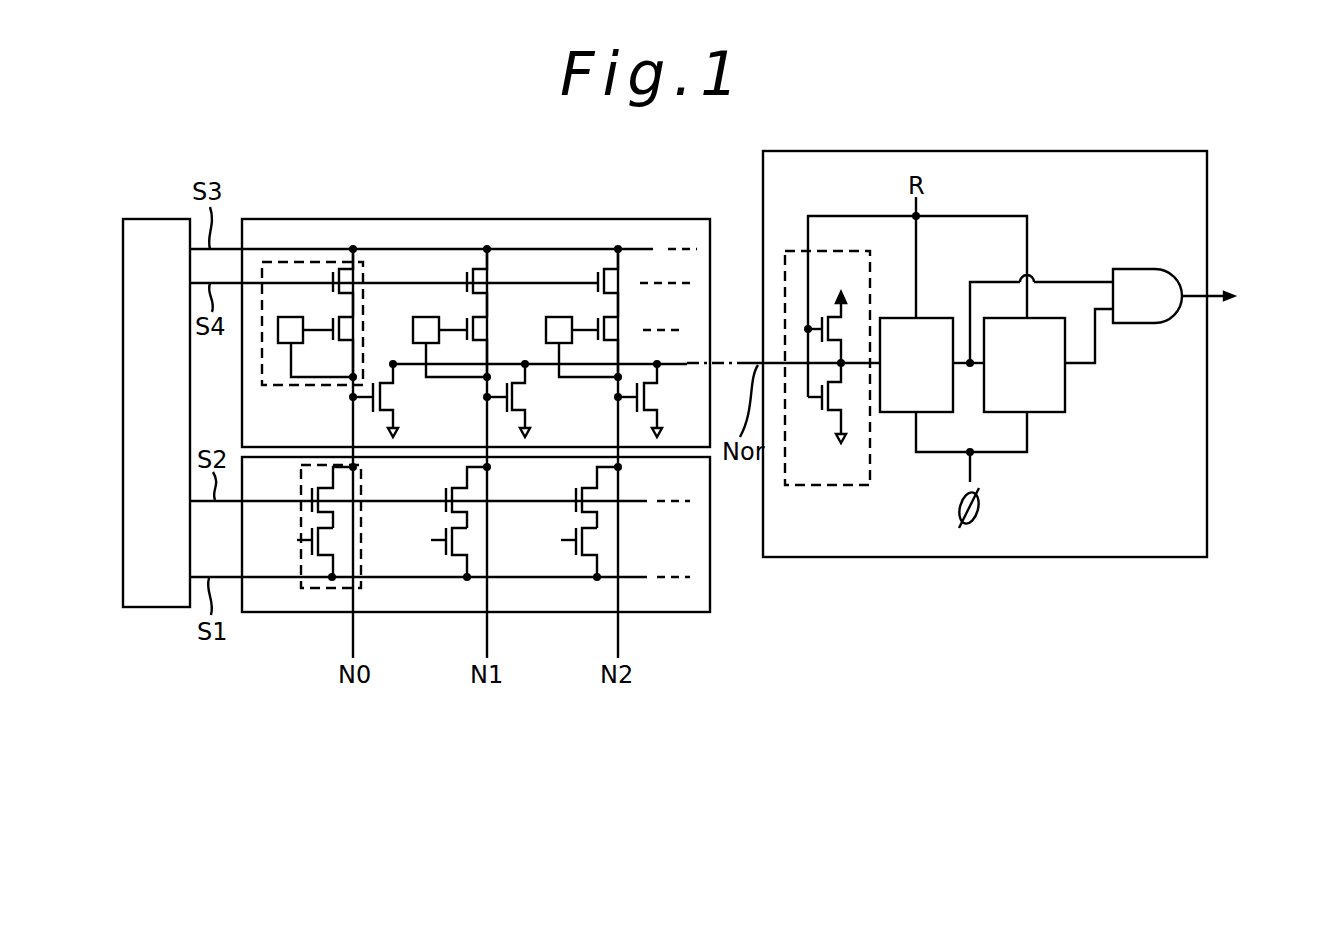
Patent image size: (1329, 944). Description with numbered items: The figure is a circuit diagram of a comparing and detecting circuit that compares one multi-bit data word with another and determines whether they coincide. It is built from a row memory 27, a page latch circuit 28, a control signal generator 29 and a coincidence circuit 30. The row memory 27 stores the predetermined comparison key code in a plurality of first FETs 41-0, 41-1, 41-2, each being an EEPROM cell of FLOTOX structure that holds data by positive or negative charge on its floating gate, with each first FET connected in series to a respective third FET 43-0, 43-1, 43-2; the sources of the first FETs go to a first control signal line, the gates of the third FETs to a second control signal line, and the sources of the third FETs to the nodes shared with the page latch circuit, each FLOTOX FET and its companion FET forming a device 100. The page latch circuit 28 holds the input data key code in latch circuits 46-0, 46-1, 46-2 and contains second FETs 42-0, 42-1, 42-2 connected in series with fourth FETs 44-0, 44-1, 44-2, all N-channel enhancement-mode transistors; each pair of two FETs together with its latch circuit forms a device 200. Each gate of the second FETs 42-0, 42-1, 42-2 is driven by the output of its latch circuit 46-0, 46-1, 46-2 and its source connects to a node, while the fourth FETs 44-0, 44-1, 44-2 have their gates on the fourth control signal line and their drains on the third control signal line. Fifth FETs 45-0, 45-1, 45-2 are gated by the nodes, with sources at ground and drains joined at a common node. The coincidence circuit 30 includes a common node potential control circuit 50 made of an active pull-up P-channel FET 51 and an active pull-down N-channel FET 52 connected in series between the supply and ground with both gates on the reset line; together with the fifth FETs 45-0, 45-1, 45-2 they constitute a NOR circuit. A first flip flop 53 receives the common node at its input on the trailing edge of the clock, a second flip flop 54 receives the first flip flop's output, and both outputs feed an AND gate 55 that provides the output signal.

The control signal generator 29 is at (160, 219).
The page latch circuit 28 is at (682, 219).
The row memory 27 is at (697, 612).
The coincidence circuit 30 is at (1048, 151).
The device composed of two FETs and the latch circuit 200 is at (342, 258).
The device composed of FLOTOX FET and other FET 100 is at (302, 588).
The common node potential control circuit 50 is at (846, 398).
The active pull-up P-channel FET 51 is at (833, 328).
The active pull-down N-channel FET 52 is at (838, 397).
The first flip flop 53 is at (945, 318).
The second flip flop 54 is at (1065, 400).
The AND gate 55 is at (1147, 269).
The fourth FET 44-0 is at (333, 273).
The fourth FET 44-1 is at (467, 273).
The fourth FET 44-2 is at (598, 273).
The second FET 42-0 is at (332, 322).
The second FET 42-1 is at (466, 322).
The second FET 42-2 is at (597, 322).
The latch circuit 46-0 is at (283, 345).
The latch circuit 46-1 is at (427, 317).
The latch circuit 46-2 is at (560, 317).
The fifth FET 45-0 is at (373, 410).
The fifth FET 45-1 is at (507, 410).
The fifth FET 45-2 is at (637, 410).
The third FET 43-0 is at (312, 490).
The third FET 43-1 is at (446, 503).
The third FET 43-2 is at (576, 503).
The first FET 41-0 is at (328, 543).
The first FET 41-1 is at (463, 543).
The first FET 41-2 is at (597, 543).